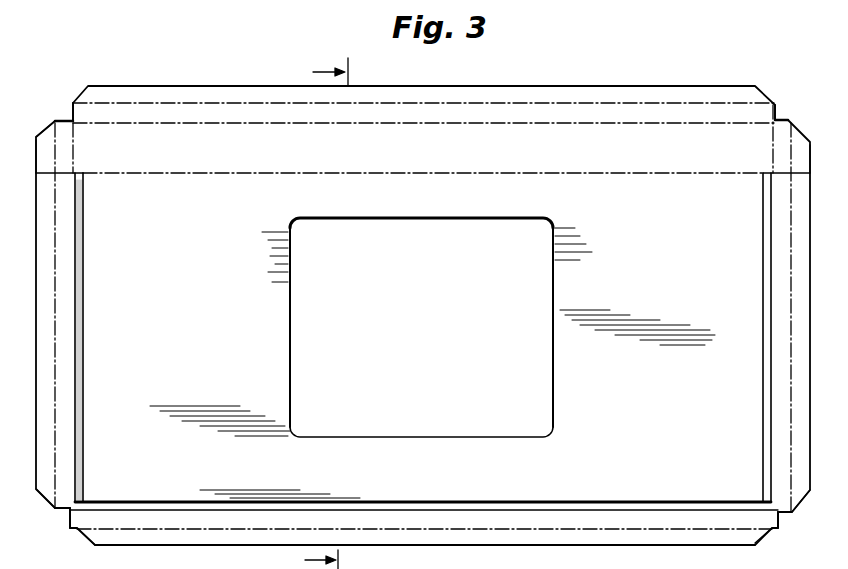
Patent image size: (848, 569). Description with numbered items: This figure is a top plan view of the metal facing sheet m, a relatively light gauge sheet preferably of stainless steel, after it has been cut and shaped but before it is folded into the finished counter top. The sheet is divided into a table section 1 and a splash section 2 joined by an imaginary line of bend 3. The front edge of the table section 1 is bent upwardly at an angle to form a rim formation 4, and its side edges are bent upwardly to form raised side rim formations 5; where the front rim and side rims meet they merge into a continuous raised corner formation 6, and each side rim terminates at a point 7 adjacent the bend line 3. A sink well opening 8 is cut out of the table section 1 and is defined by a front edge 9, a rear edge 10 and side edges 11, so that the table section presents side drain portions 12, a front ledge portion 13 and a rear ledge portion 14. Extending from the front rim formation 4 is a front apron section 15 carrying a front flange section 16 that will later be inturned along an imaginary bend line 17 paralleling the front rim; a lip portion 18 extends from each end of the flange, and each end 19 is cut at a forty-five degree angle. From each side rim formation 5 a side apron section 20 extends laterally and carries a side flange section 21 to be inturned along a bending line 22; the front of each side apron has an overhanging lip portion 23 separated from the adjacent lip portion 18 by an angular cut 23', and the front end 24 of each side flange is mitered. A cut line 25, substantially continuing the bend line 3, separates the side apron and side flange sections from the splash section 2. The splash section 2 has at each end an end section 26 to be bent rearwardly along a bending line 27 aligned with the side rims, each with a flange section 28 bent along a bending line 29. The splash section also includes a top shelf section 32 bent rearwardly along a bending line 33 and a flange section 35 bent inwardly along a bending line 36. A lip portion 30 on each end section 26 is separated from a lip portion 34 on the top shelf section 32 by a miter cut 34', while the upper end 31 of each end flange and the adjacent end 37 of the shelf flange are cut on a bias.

The table section 1 is at (661, 439).
The splash section 2 is at (424, 144).
The imaginary line of bend 3 is at (622, 174).
The rim formation 4 is at (583, 501).
The side rim formations 5 is at (84, 405).
The raised corner formation 6 is at (84, 498).
The termination of side rim formation 7 is at (90, 173).
The sink well opening 8 is at (535, 348).
The front edge 9 is at (440, 436).
The rear edge 10 is at (432, 221).
The side edges 11 is at (292, 302).
The side drain portions 12 is at (432, 363).
The front ledge portion 13 is at (418, 464).
The rear ledge portion 14 is at (420, 197).
The front apron section 15 is at (424, 523).
The front flange section 16 is at (473, 535).
The imaginary bend line 17 is at (522, 545).
The lip portion 18 is at (70, 530).
The end of front flange section 19 is at (84, 537).
The side apron section 20 is at (66, 328).
The side flange section 21 is at (46, 282).
The bending line 22 is at (56, 376).
The overhanging lip portion 23 is at (423, 528).
The angular cut 23' is at (426, 474).
The front end of side flange section 24 is at (46, 496).
The cut line 25 is at (80, 178).
The end section 26 is at (78, 138).
The bending line 27 is at (74, 156).
The flange section 28 is at (424, 156).
The bending line 29 is at (40, 134).
The lip portion 30 is at (58, 117).
The upper end of end flange section 31 is at (55, 117).
The top shelf section 32 is at (409, 116).
The bending line 33 is at (335, 124).
The lip portion 34 is at (437, 75).
The miter cut 34' is at (424, 107).
The flange section 35 is at (242, 70).
The bending line 36 is at (278, 102).
The end of flange section 37 is at (88, 86).
The metal facing sheet m is at (656, 84).